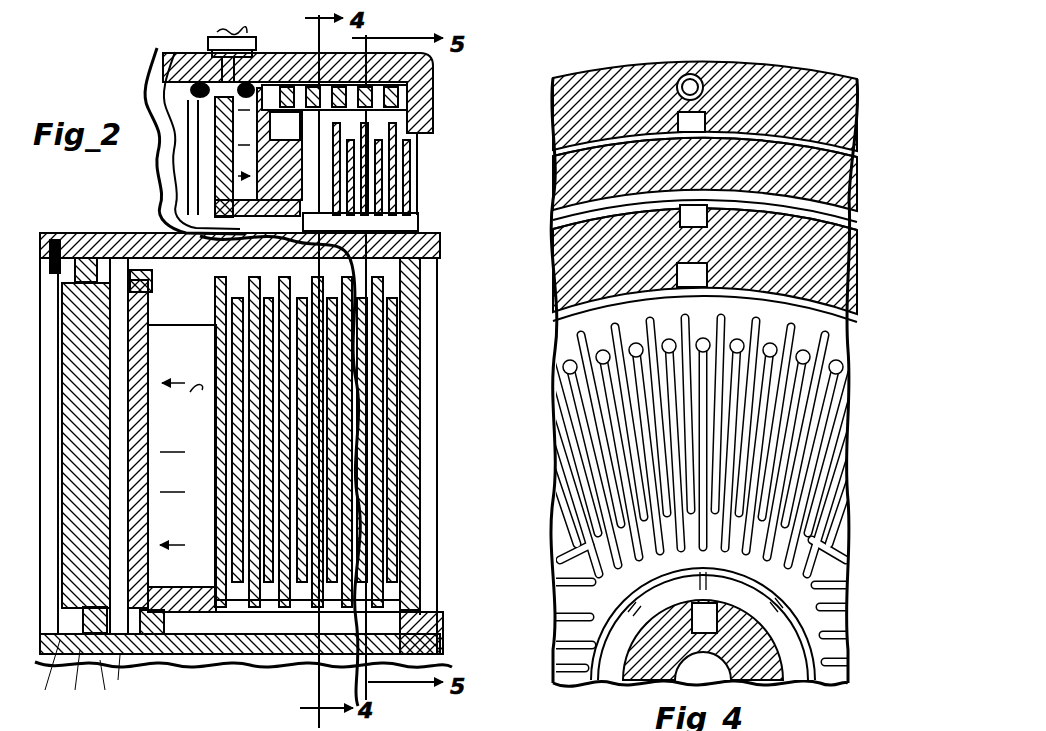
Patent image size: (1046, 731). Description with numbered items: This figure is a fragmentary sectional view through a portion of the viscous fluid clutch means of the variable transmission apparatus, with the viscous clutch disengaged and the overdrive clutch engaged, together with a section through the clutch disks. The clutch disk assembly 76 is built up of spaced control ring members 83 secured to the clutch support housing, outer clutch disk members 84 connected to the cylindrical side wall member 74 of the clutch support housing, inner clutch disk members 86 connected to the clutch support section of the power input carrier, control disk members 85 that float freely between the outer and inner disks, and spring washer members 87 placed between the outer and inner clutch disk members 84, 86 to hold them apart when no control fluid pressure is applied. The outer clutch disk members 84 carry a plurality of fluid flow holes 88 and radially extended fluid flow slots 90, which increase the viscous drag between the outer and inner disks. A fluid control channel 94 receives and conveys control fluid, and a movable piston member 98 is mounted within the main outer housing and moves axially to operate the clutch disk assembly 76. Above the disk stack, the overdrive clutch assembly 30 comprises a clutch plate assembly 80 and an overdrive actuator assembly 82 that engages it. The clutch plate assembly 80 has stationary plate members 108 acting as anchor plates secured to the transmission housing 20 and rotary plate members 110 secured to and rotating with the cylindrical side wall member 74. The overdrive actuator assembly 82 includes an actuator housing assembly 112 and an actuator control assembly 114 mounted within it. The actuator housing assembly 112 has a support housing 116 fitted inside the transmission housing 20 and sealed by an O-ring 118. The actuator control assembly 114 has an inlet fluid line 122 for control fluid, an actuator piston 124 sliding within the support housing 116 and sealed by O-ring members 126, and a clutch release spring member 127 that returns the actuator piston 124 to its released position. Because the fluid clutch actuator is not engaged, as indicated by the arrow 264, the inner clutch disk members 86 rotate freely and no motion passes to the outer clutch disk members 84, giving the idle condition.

In FIG. 2, the transmission housing 20 is at (291, 53).
In FIG. 4, the transmission housing 20 is at (752, 64).
In FIG. 2, the overdrive clutch assembly 30 is at (438, 99).
In FIG. 4, the cylindrical side wall member 74 is at (790, 258).
In FIG. 4, the clutch disk assembly 76 is at (560, 326).
In FIG. 2, the clutch plate assembly 80 is at (405, 133).
In FIG. 2, the overdrive actuator assembly 82 is at (212, 140).
In FIG. 2, the control ring members 83 is at (410, 277).
In FIG. 2, the outer clutch disk members 84 is at (282, 446).
In FIG. 4, the outer clutch disk members 84 is at (758, 476).
In FIG. 2, the control disk members 85 is at (302, 556).
In FIG. 2, the inner clutch disk members 86 is at (320, 520).
In FIG. 4, the spring washer members 87 is at (622, 628).
In FIG. 4, the fluid flow holes 88 is at (700, 323).
In FIG. 4, the fluid flow slots 90 is at (850, 312).
In FIG. 2, the fluid control channel 94 is at (107, 653).
In FIG. 2, the piston member 98 is at (150, 426).
In FIG. 2, the stationary plate members 108 is at (398, 147).
In FIG. 2, the rotary plate members 110 is at (408, 186).
In FIG. 2, the actuator housing assembly 112 is at (183, 56).
In FIG. 2, the actuator control assembly 114 is at (238, 92).
In FIG. 2, the support housing 116 is at (290, 167).
In FIG. 2, the O-ring 118 is at (192, 80).
In FIG. 2, the inlet fluid line 122 is at (223, 40).
In FIG. 2, the actuator piston 124 is at (232, 208).
In FIG. 4, the actuator piston 124 is at (768, 153).
In FIG. 2, the O-ring members 126 is at (217, 265).
In FIG. 2, the clutch release spring member 127 is at (410, 78).
In FIG. 4, the clutch release spring member 127 is at (676, 76).
In FIG. 2, the arrow 264 is at (180, 401).